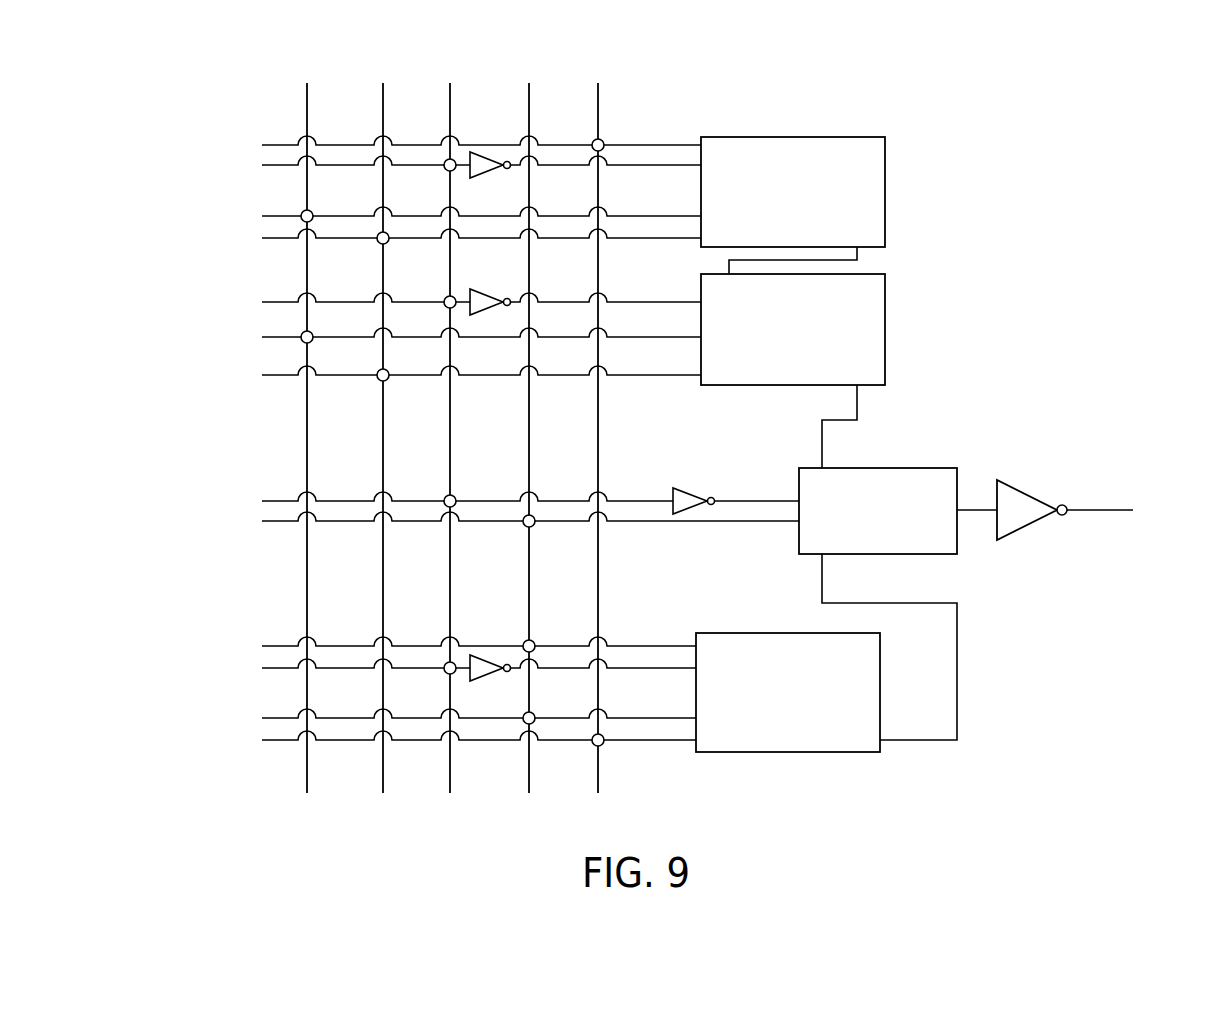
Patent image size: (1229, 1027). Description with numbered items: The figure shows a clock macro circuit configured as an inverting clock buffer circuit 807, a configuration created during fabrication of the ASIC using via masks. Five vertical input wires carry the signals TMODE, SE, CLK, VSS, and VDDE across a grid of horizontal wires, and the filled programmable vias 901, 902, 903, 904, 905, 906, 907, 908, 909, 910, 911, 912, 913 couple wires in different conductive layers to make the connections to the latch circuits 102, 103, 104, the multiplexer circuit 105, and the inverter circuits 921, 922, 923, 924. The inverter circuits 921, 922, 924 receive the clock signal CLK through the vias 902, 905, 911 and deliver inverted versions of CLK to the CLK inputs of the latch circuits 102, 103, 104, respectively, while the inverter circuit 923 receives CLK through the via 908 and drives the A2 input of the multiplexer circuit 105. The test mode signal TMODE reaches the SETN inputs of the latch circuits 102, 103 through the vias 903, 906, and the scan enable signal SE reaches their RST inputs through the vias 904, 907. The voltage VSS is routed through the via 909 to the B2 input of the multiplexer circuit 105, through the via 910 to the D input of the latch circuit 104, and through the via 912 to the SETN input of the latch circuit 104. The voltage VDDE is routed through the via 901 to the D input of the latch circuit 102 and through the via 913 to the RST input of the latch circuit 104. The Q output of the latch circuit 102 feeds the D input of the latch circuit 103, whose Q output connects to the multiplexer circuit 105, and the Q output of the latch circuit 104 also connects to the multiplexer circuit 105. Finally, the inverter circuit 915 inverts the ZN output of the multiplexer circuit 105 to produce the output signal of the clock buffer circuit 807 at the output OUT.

The clock buffer circuit 807 is at (219, 66).
The latch circuit 102 is at (800, 137).
The latch circuit 103 is at (767, 386).
The latch circuit 104 is at (730, 633).
The multiplexer circuit 105 is at (910, 468).
The inverter circuit 915 is at (1025, 490).
The via 901 is at (603, 140).
The via 902 is at (447, 171).
The via 903 is at (312, 211).
The via 904 is at (380, 244).
The via 905 is at (447, 296).
The via 906 is at (304, 331).
The via 907 is at (380, 381).
The via 908 is at (447, 495).
The via 909 is at (526, 527).
The via 910 is at (526, 640).
The via 911 is at (447, 674).
The via 912 is at (533, 712).
The via 913 is at (595, 746).
The inverter circuit 921 is at (488, 174).
The inverter circuit 922 is at (487, 291).
The inverter circuit 923 is at (684, 488).
The inverter circuit 924 is at (488, 677).